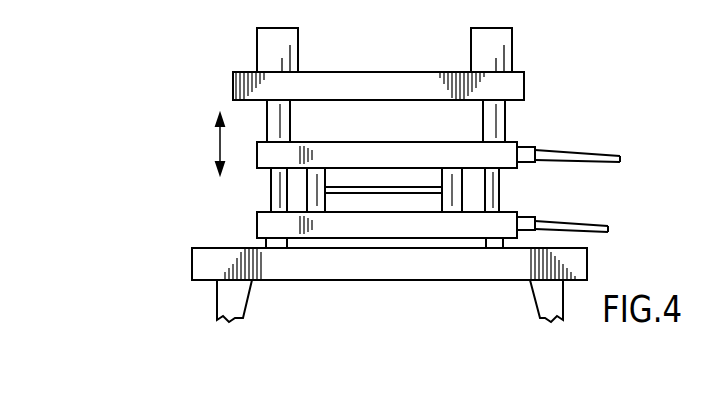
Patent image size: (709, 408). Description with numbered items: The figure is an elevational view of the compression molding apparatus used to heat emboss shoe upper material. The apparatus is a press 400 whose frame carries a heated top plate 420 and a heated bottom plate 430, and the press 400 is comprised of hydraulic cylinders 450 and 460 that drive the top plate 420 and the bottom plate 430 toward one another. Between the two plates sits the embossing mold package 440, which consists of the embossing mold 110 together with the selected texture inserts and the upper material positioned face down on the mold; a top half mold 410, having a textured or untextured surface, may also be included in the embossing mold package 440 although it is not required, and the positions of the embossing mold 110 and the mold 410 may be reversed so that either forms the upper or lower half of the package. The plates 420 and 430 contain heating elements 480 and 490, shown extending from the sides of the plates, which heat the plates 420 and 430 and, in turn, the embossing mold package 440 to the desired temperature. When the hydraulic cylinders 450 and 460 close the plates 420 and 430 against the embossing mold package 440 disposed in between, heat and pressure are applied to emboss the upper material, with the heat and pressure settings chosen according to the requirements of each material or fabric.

The press 400 is at (170, 220).
The hydraulic cylinder 450 is at (267, 122).
The hydraulic cylinder 460 is at (505, 118).
The heated top plate 420 is at (358, 150).
The heated bottom plate 430 is at (335, 224).
The top half mold 410 is at (427, 183).
The embossing mold 110 is at (415, 198).
The embossing mold package 440 is at (307, 187).
The heating element 480 is at (530, 147).
The heating element 490 is at (530, 217).